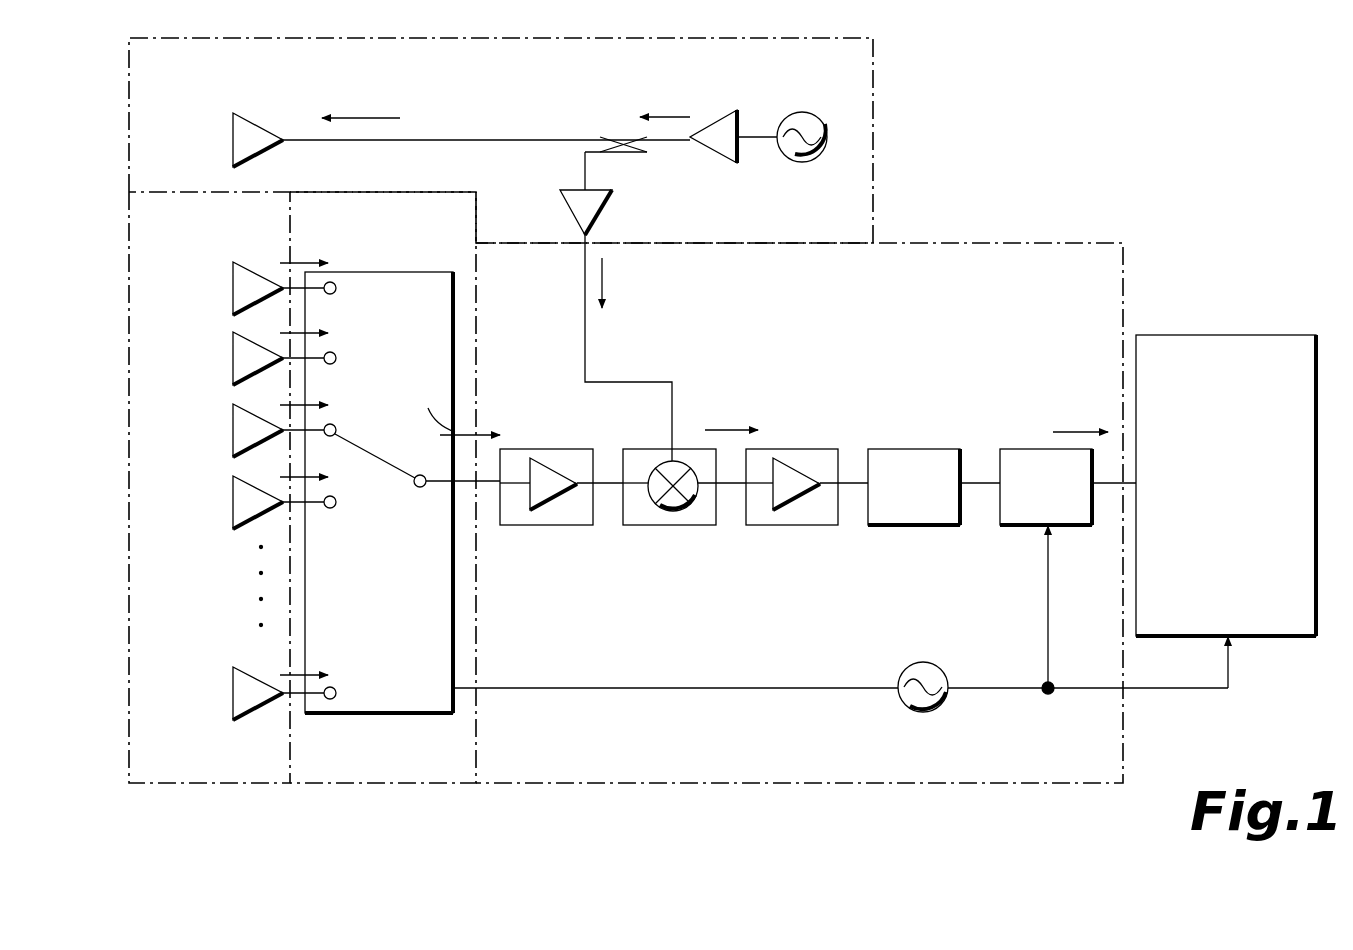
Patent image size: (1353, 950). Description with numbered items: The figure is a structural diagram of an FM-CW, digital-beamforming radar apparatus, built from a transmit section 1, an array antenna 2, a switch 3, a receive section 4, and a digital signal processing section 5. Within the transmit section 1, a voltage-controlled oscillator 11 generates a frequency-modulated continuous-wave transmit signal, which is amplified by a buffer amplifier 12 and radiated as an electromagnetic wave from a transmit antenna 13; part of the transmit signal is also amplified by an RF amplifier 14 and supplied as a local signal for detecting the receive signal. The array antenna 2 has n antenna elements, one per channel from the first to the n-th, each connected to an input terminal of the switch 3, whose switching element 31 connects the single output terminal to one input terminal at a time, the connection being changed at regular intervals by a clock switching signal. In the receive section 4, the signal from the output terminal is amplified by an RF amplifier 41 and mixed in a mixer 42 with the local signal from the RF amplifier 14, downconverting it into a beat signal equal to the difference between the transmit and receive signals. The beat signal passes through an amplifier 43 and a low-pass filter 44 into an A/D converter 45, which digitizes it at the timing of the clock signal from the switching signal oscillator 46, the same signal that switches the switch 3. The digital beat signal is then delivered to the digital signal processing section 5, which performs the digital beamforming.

The transmit section 1 is at (448, 37).
The array antenna 2 is at (235, 783).
The switch 3 is at (403, 783).
The receive section 4 is at (923, 242).
The digital signal processing section 5 is at (1205, 335).
The voltage-controlled oscillator 11 is at (798, 163).
The buffer amplifier 12 is at (723, 117).
The transmit antenna 13 is at (260, 113).
The RF amplifier 14 is at (610, 200).
The switch 31 is at (380, 713).
The RF amplifier 41 is at (560, 525).
The mixer 42 is at (670, 525).
The amplifier 43 is at (783, 525).
The low-pass filter 44 is at (897, 525).
The A/D converter 45 is at (1022, 525).
The switching signal oscillator 46 is at (945, 668).